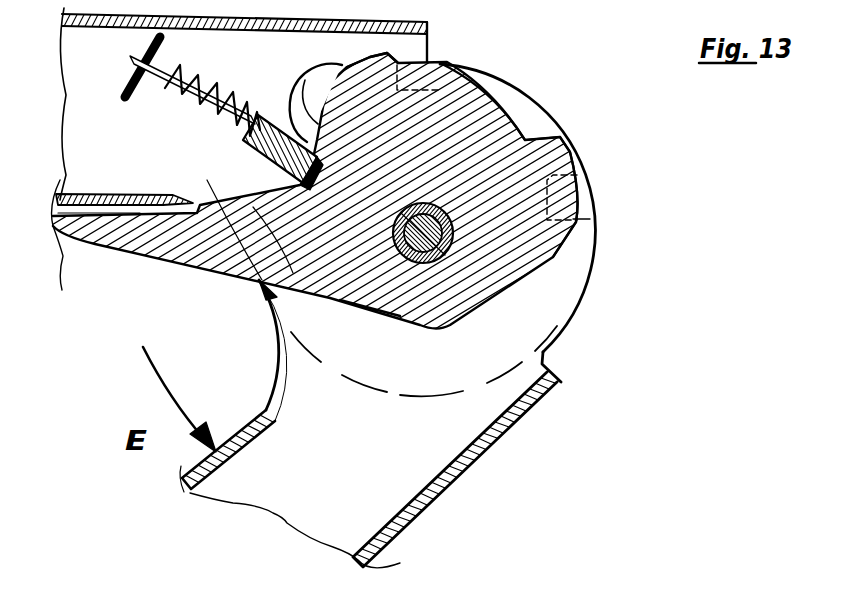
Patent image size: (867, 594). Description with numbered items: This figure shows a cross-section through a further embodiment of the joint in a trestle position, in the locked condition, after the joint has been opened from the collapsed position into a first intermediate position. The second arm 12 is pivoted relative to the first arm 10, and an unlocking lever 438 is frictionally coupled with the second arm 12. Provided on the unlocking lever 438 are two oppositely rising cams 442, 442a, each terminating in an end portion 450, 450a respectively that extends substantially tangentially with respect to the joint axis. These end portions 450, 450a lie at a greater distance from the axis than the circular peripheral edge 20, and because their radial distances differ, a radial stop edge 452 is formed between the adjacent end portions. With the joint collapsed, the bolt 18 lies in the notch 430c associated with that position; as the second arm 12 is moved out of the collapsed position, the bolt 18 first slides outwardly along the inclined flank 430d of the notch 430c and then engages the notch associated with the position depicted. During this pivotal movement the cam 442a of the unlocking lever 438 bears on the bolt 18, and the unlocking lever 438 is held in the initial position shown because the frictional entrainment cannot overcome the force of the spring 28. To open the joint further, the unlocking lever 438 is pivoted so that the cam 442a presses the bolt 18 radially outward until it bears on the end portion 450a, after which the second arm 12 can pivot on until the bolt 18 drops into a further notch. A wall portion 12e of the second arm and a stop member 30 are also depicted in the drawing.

The first arm 10 is at (118, 182).
The second arm 12 is at (317, 510).
The wall portion of shell 12e is at (229, 438).
The bolt 18 is at (248, 158).
The circular peripheral edge 20 is at (585, 283).
The spring 28 is at (173, 102).
The stop member 30 is at (583, 197).
The notch 430c is at (258, 292).
The inclined flank 430d is at (237, 270).
The unlocking lever 438 is at (367, 297).
The cam 442 is at (533, 100).
The cam 442a is at (300, 80).
The end portion 450 is at (440, 62).
The end portion 450a is at (393, 50).
The radial stop edge 452 is at (433, 57).